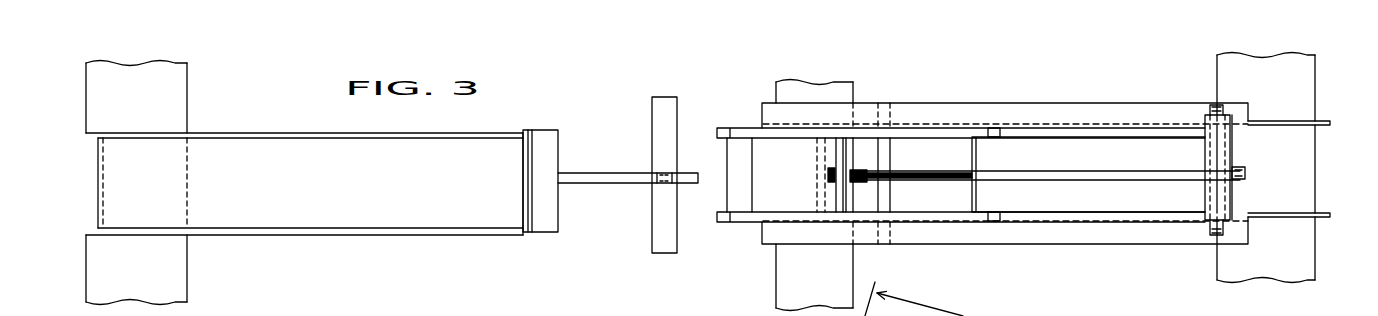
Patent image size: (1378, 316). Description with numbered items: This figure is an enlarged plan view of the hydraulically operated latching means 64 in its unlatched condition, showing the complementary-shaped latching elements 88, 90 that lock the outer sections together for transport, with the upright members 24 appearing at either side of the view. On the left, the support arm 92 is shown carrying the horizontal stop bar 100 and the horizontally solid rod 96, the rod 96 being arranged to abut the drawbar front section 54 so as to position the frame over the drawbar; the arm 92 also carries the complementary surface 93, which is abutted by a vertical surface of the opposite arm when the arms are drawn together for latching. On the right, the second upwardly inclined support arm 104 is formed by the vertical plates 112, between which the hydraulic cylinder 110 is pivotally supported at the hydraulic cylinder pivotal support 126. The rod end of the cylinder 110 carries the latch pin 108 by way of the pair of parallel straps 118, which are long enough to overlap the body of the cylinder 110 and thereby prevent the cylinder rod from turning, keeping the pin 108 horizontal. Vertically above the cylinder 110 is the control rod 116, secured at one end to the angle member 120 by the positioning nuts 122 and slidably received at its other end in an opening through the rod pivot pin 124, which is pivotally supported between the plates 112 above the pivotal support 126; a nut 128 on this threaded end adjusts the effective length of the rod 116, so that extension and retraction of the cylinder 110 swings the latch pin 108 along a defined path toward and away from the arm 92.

The post 24 is at (187, 278).
The support arm 92 is at (310, 235).
The complementary surface 93 is at (533, 210).
The latching element 88 is at (630, 241).
The horizontal stop bar 100 is at (652, 113).
The hydraulic latching means 64 is at (710, 279).
The drawbar front section 54 is at (853, 262).
The vertical plates 112 is at (1095, 105).
The latch pin 108 is at (751, 176).
The angle member 120 is at (816, 148).
The positioning nuts 122 is at (833, 180).
The horizontally solid rod 96 is at (880, 153).
The control rod 116 is at (1000, 172).
The hydraulic cylinder 110 is at (1087, 203).
The parallel straps 118 is at (968, 136).
The second upwardly inclined support arm 104 is at (1050, 245).
The latching element 90 is at (1062, 267).
The rod pivot pin 124 is at (1215, 155).
The hydraulic cylinder pivotal support 126 is at (1232, 205).
The nut 128 is at (1236, 169).